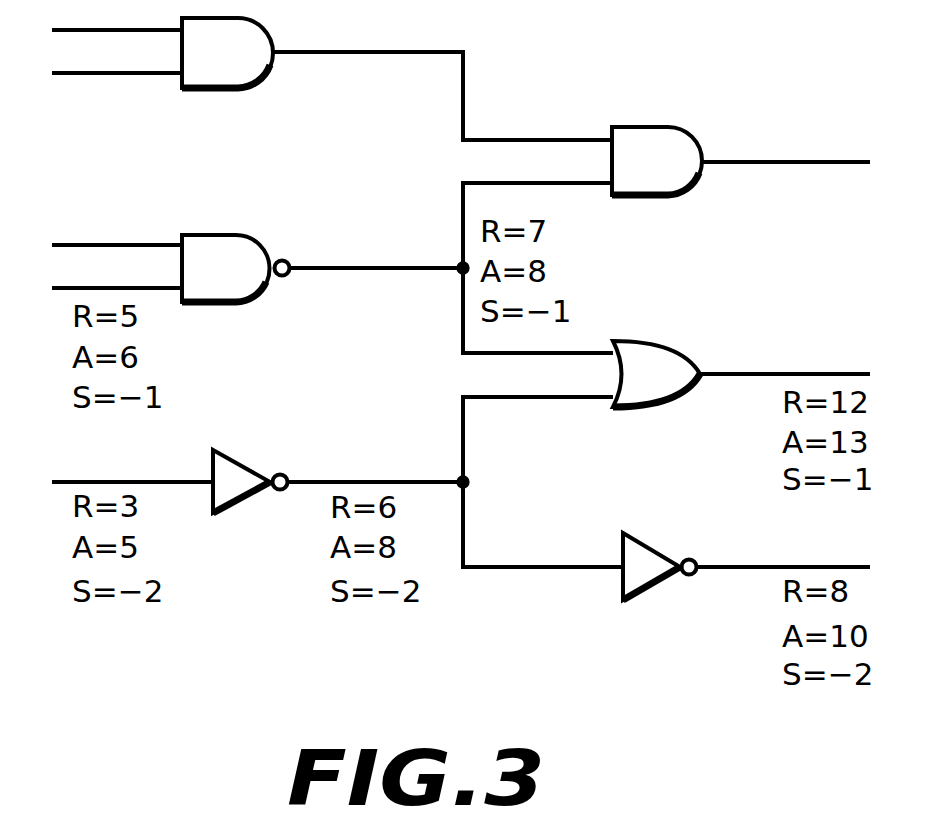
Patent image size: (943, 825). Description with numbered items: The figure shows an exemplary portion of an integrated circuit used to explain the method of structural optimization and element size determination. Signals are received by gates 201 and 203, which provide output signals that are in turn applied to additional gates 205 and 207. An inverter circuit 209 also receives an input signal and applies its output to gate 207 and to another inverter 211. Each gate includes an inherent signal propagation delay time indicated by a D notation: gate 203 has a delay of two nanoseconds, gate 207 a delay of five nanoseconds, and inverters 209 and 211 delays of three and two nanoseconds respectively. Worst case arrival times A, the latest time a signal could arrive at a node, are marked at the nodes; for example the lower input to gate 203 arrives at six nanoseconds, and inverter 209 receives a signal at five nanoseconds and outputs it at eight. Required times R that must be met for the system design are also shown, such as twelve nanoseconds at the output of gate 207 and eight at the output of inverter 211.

The gate 201 is at (232, 89).
The gate 203 is at (223, 234).
The gate 205 is at (653, 124).
The gate 207 is at (653, 342).
The inverter circuit 209 is at (247, 518).
The inverter 211 is at (655, 608).